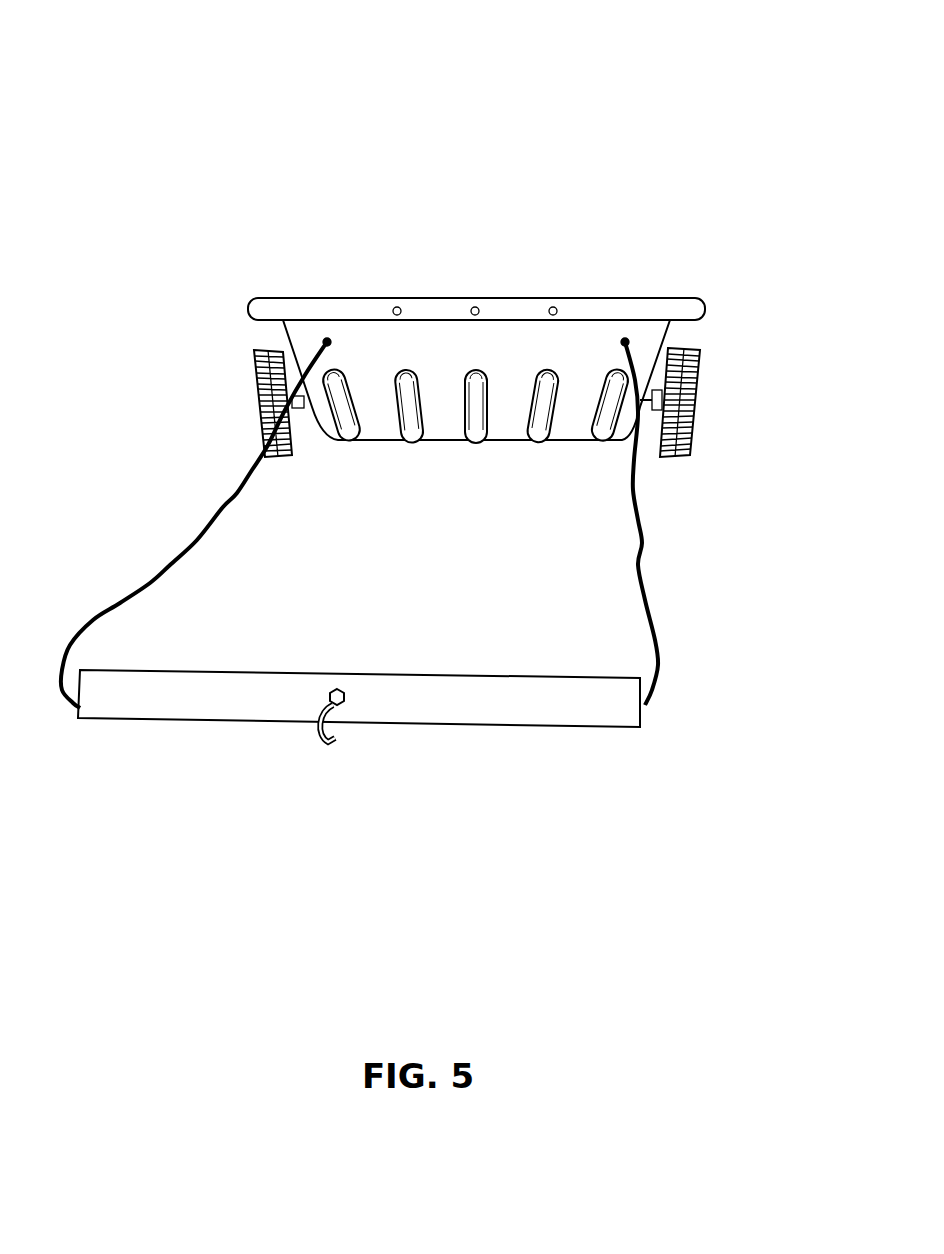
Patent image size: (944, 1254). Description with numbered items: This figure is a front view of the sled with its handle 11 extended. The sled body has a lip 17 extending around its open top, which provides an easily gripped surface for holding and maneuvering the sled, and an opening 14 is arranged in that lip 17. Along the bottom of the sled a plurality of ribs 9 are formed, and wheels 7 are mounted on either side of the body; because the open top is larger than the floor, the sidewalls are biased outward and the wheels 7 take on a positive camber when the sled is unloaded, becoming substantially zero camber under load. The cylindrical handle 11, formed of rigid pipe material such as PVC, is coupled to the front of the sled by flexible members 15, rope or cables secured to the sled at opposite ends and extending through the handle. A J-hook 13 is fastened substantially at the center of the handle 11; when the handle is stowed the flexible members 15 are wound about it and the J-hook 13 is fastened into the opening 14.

The wheels 7 is at (253, 380).
The ribs 9 is at (475, 427).
The handle 11 is at (468, 717).
The J-hook 13 is at (334, 745).
The opening 14 is at (471, 285).
The flexible members 15 is at (642, 543).
The lip 17 is at (625, 298).